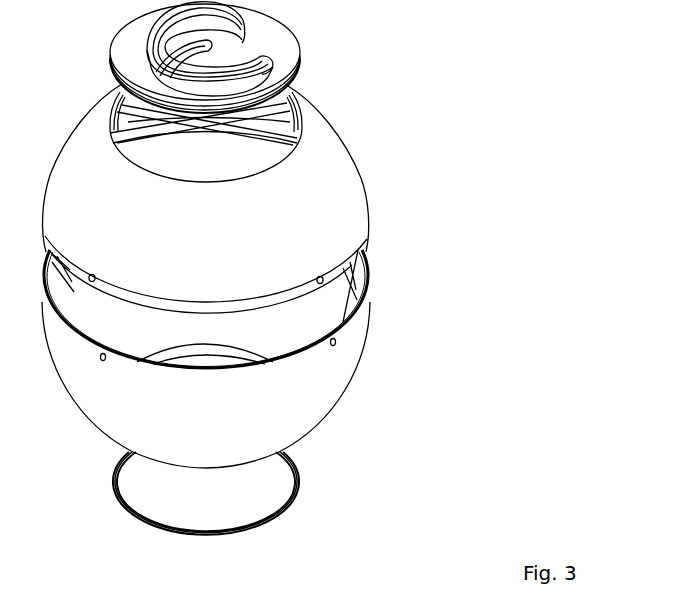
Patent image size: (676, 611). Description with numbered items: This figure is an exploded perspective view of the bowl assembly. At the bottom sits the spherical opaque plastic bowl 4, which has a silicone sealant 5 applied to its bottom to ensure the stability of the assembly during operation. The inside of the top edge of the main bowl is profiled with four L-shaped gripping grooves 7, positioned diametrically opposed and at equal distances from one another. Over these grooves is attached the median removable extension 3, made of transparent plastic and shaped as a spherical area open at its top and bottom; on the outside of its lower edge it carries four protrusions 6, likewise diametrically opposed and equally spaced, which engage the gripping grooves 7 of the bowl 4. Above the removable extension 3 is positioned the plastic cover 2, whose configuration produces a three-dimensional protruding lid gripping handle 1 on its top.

The lid gripping handle 1 is at (245, 31).
The plastic cover 2 is at (303, 62).
The median removable extension 3 is at (333, 180).
The opaque plastic bowl 4 is at (323, 382).
The silicone sealant 5 is at (302, 483).
The protrusions 6 is at (361, 264).
The L-shaped gripping grooves 7 is at (340, 327).